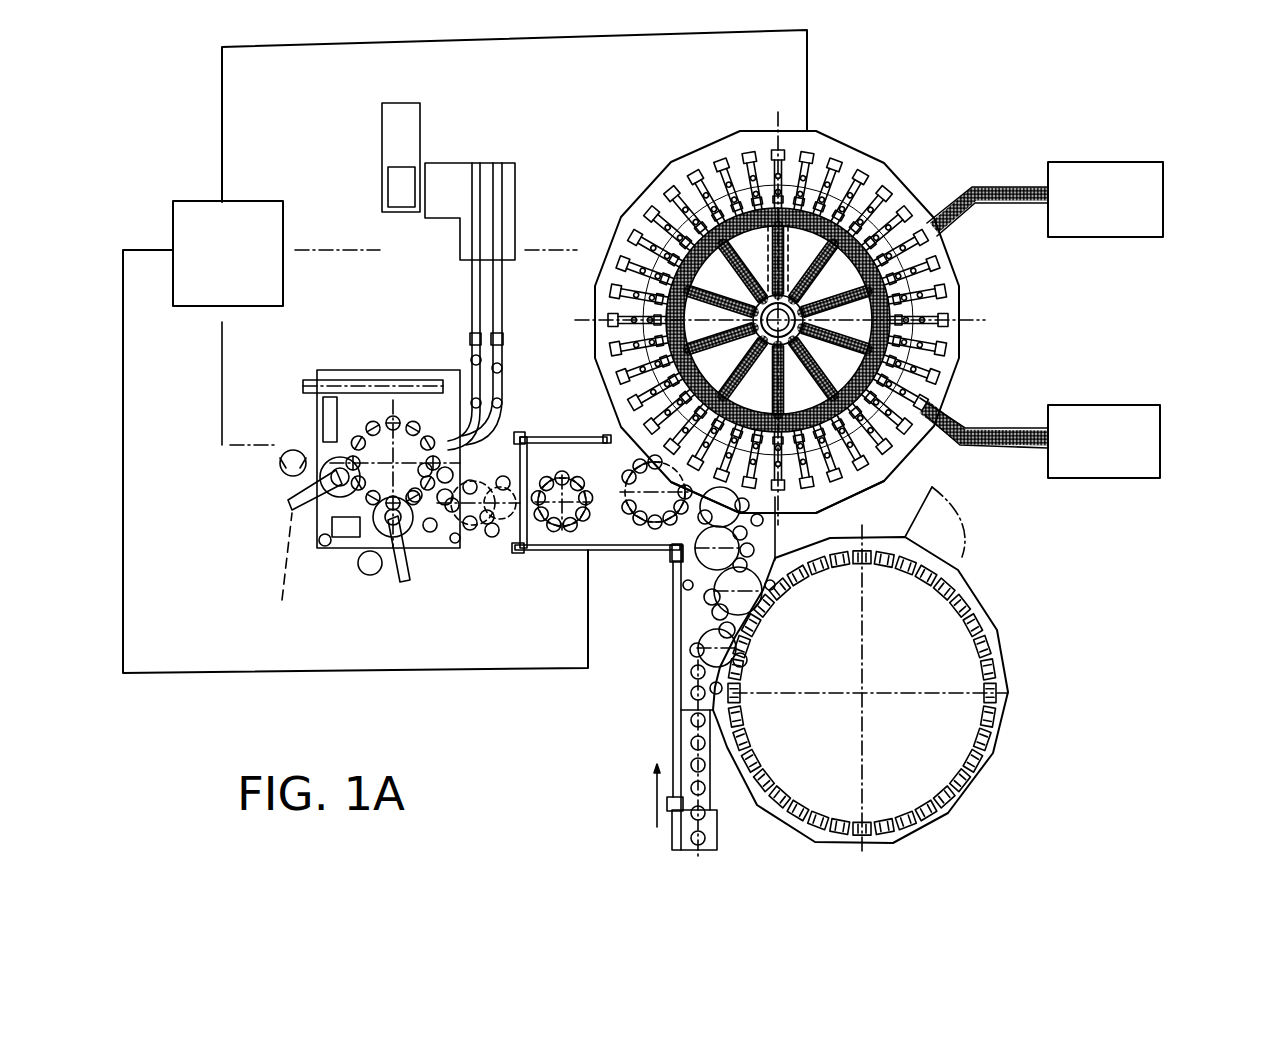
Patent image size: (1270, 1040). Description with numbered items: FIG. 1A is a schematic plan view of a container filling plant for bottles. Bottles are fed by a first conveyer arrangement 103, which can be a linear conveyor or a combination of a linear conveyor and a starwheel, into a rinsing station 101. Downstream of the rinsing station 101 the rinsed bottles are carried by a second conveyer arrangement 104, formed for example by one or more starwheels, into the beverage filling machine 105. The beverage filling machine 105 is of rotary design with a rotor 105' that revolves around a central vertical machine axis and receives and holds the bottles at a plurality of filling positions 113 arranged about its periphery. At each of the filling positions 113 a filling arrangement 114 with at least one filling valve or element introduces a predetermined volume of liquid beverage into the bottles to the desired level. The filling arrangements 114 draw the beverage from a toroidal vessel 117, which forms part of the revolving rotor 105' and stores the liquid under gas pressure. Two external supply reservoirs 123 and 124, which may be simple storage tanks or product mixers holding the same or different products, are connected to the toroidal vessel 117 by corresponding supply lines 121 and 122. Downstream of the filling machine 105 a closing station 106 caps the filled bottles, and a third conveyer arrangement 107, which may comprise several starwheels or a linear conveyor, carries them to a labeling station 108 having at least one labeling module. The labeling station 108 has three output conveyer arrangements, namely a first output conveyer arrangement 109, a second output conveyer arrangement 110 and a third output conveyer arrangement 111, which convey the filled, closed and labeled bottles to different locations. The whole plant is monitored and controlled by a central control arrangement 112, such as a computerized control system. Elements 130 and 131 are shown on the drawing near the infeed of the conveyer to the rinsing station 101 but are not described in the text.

The rinsing station 101 is at (1028, 587).
The first conveyer arrangement 103 is at (710, 773).
The second conveyer arrangement 104 is at (687, 613).
The beverage filling machine 105 is at (832, 318).
The rotor 105' is at (777, 303).
The closing station 106 is at (580, 427).
The third conveyer arrangement 107 is at (530, 565).
The labeling station 108 is at (347, 588).
The first output conveyer arrangement 109 is at (502, 353).
The second output conveyer arrangement 110 is at (472, 293).
The third output conveyer arrangement 111 is at (355, 380).
The central control arrangement 112 is at (210, 268).
The filling positions 113 is at (952, 252).
The filling arrangement 114 is at (940, 348).
The toroidal vessel 117 is at (895, 478).
The supply line 121 is at (997, 187).
The supply line 122 is at (997, 428).
The external supply reservoir 123 is at (1153, 207).
The external supply reservoir 124 is at (1160, 448).
The loading station 130 is at (700, 790).
The loading direction 131 is at (633, 795).